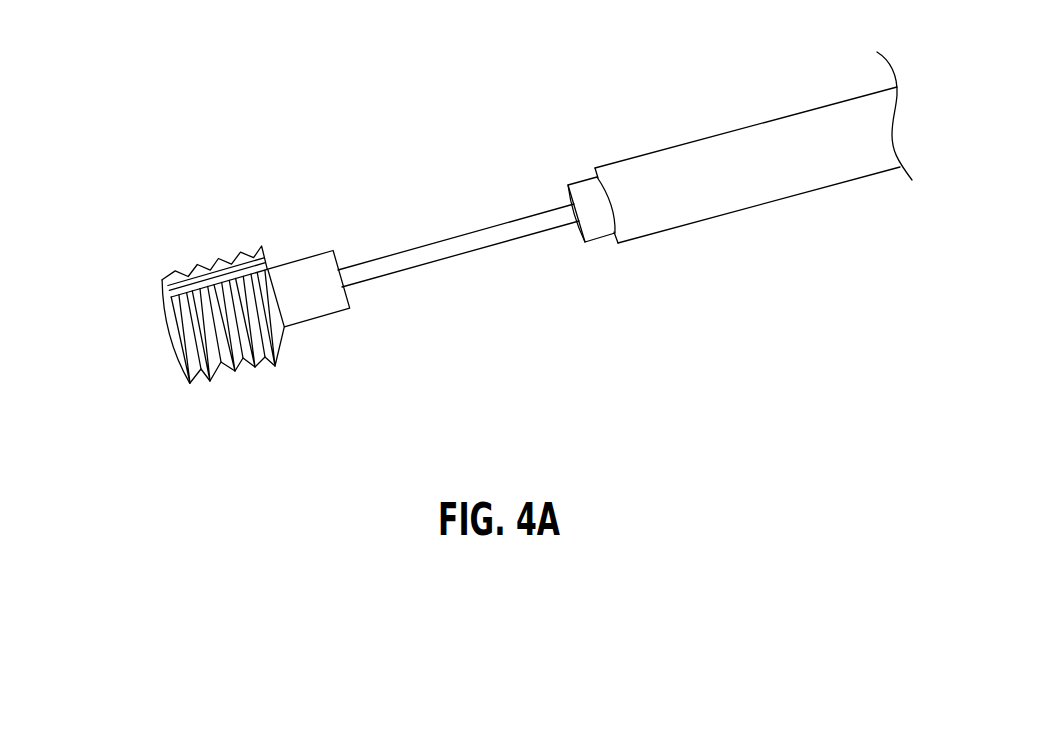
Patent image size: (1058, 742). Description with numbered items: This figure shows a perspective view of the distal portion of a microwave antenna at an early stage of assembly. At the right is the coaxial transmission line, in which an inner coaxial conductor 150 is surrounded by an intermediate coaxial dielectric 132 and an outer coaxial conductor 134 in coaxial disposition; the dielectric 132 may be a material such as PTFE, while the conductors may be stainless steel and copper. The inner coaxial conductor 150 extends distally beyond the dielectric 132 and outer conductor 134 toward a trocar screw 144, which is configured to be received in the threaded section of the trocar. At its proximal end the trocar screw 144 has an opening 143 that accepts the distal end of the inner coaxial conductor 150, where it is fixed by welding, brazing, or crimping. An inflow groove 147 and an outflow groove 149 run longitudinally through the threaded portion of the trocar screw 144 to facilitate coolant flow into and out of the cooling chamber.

The intermediate coaxial dielectric 132 is at (585, 178).
The outer coaxial conductor 134 is at (872, 88).
The opening 143 is at (348, 298).
The trocar screw 144 is at (217, 258).
The inflow groove 147 is at (168, 278).
The outflow groove 149 is at (237, 367).
The inner coaxial conductor 150 is at (477, 230).